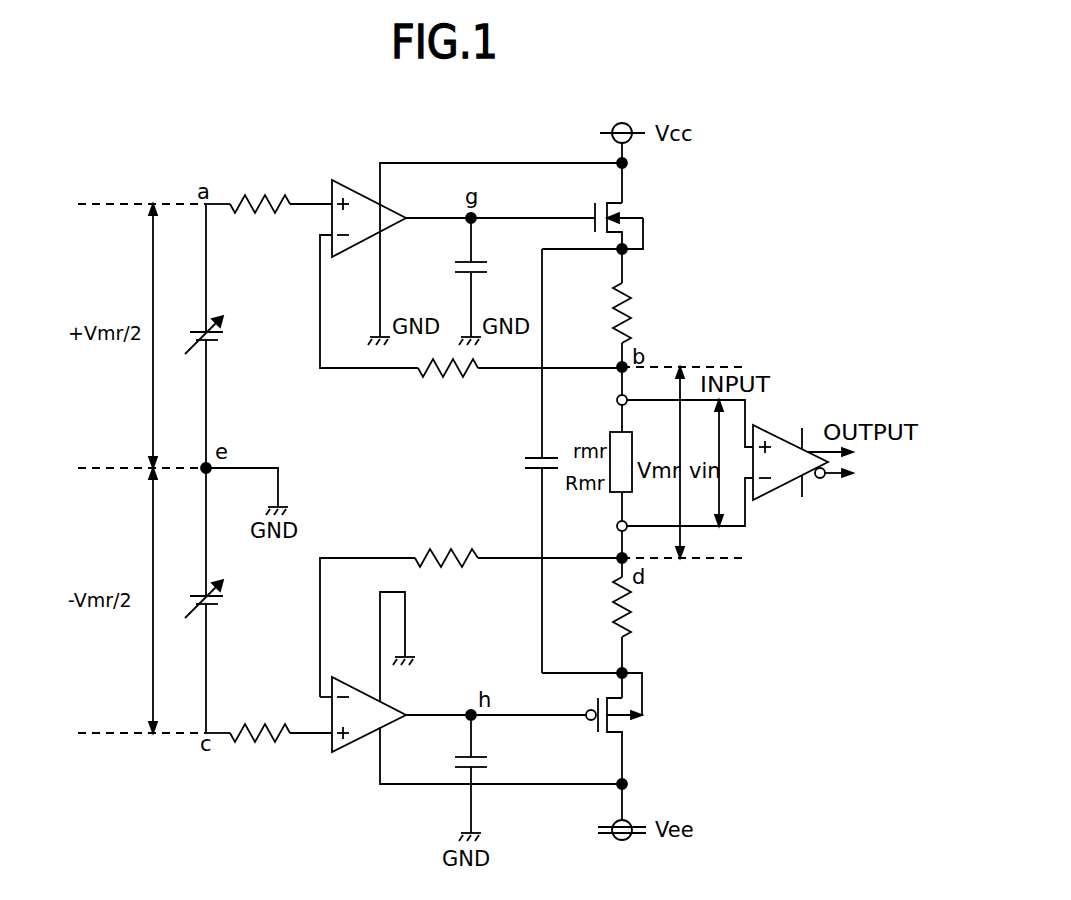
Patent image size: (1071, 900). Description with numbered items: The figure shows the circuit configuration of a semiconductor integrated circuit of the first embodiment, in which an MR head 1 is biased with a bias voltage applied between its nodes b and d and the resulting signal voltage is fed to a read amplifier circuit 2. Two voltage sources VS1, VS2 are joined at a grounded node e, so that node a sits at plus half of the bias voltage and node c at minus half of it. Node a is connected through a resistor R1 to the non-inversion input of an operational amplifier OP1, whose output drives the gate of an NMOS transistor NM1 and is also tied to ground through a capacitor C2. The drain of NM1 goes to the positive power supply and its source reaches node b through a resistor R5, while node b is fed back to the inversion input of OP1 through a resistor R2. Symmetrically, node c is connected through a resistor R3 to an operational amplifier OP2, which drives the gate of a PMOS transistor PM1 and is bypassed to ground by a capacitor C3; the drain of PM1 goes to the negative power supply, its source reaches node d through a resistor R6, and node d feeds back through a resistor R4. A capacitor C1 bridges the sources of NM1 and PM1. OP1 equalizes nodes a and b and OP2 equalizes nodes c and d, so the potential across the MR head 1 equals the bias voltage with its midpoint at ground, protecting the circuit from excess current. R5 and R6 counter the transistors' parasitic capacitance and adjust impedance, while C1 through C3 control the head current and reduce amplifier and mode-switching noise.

The MR head 1 is at (611, 432).
The read amplifier circuit 2 is at (765, 496).
The resistor R1 is at (269, 190).
The resistor R2 is at (471, 323).
The resistor R3 is at (269, 716).
The resistor R4 is at (471, 614).
The resistor R5 is at (604, 322).
The resistor R6 is at (604, 628).
The capacitor C1 is at (555, 461).
The capacitor C2 is at (451, 281).
The capacitor C3 is at (451, 778).
The operational amplifier OP1 is at (477, 254).
The operational amplifier OP2 is at (471, 688).
The NMOS transistor NM1 is at (639, 220).
The PMOS transistor PM1 is at (632, 746).
The voltage source VS1 is at (231, 335).
The voltage source VS2 is at (231, 599).